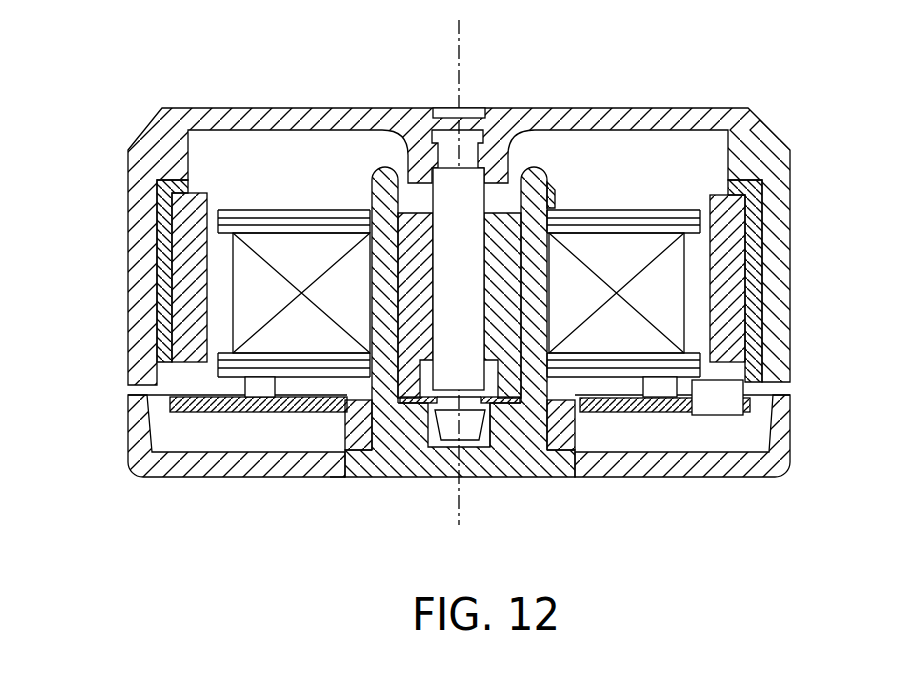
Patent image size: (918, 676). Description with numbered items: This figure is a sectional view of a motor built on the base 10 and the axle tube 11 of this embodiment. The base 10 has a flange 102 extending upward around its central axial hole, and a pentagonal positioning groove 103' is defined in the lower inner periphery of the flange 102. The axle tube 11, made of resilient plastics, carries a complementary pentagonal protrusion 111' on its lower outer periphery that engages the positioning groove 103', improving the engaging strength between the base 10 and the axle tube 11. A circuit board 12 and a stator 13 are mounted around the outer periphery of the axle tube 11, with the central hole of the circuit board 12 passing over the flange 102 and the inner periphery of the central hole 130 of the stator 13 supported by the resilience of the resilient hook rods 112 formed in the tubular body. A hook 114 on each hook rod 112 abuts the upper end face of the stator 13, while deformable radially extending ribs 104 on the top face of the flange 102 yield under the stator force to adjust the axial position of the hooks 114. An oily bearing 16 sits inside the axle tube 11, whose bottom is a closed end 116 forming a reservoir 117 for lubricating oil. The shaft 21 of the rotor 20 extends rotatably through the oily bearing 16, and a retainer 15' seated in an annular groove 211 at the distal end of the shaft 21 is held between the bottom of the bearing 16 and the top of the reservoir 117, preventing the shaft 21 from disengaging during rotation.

The base 10 is at (130, 477).
The axle tube 11 is at (535, 166).
The circuit board 12 is at (663, 413).
The stator 13 is at (657, 260).
The retainer 15' is at (449, 482).
The oily bearing 16 is at (382, 130).
The rotor 20 is at (615, 128).
The shaft 21 is at (472, 247).
The flange 102 is at (342, 417).
The pentagonal positioning groove 103' is at (443, 474).
The ribs 104 is at (175, 409).
The pentagonal protrusion 111' is at (460, 355).
The resilient hook rod 112 is at (372, 251).
The hook 114 is at (378, 197).
The closed end 116 is at (530, 445).
The reservoir 117 is at (492, 425).
The central hole 130 is at (550, 294).
The annular groove 211 is at (481, 442).